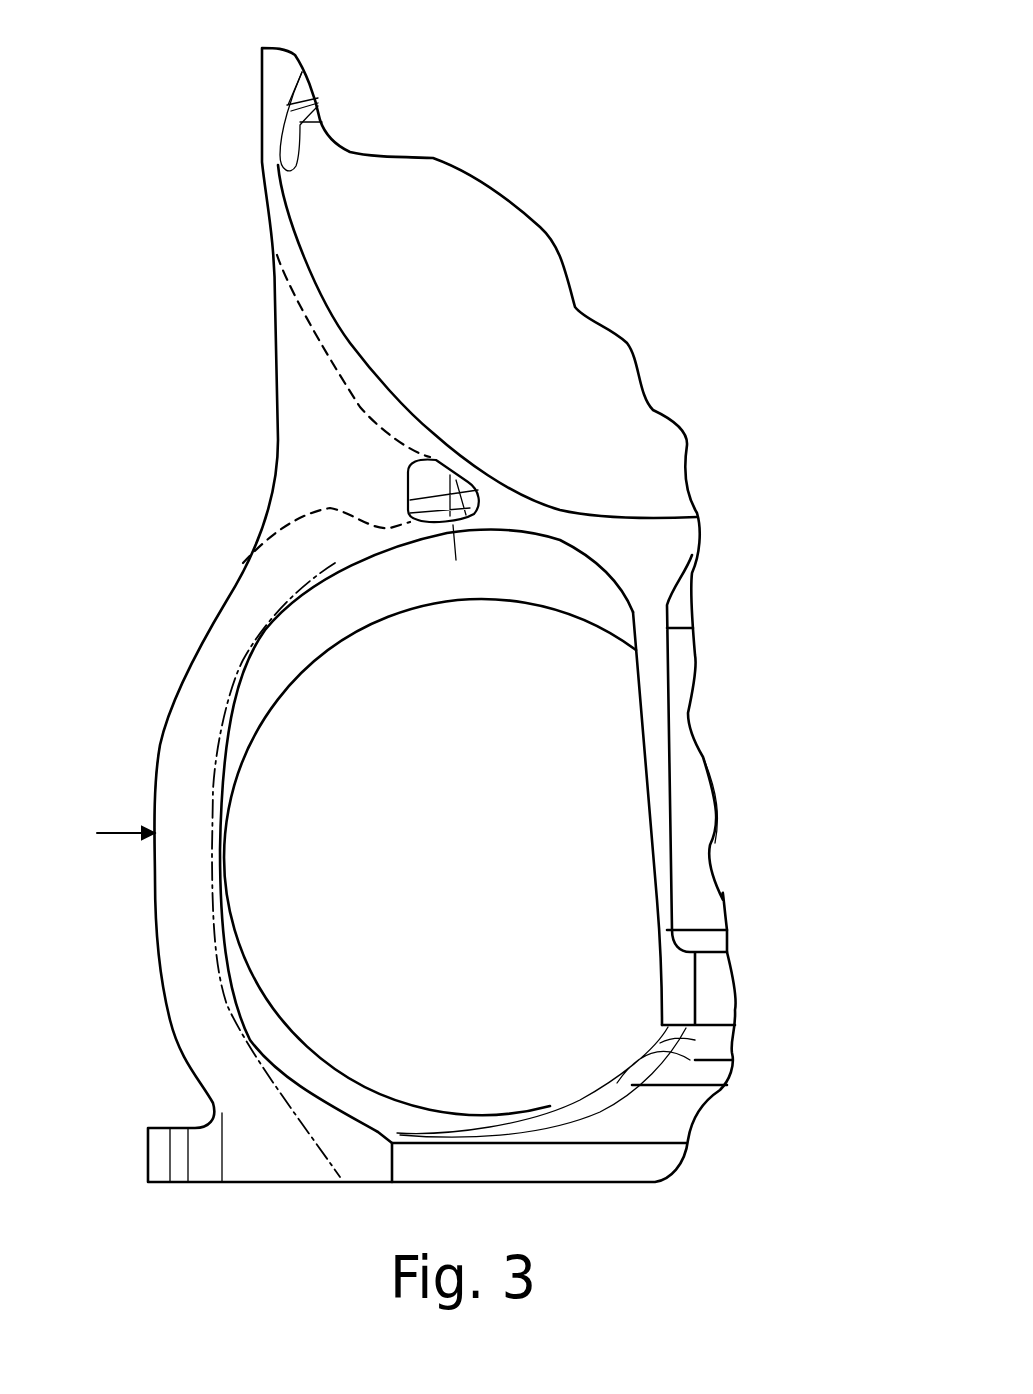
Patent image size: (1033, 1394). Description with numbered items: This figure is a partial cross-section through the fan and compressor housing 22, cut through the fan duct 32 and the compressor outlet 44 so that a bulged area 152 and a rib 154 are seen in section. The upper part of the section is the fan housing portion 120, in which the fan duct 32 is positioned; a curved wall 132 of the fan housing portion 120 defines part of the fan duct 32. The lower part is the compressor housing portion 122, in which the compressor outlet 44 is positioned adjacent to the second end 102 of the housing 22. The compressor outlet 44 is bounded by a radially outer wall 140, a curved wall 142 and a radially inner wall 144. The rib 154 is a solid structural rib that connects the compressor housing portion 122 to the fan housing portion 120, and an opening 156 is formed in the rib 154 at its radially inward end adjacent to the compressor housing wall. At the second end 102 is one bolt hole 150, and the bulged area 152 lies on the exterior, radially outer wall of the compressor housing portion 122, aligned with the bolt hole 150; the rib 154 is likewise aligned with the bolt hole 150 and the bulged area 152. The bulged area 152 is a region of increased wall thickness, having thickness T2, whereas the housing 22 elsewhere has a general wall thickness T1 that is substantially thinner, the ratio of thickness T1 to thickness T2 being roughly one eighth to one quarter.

The fan and compressor housing 22 is at (578, 112).
The fan housing portion 120 is at (598, 252).
The fan duct 32 is at (480, 292).
The curved wall 132 is at (362, 372).
The rib 154 is at (310, 463).
The opening 156 is at (432, 480).
The curved wall 142 is at (454, 528).
The radially outer wall 140 is at (218, 858).
The compressor outlet 44 is at (478, 847).
The radially inner wall 144 is at (663, 797).
The compressor housing portion 122 is at (762, 766).
The bulged area 152 is at (175, 862).
The thickness T1 is at (157, 693).
The thickness T2 is at (226, 833).
The bolt hole 150 is at (176, 1162).
The second end 102 is at (566, 1185).